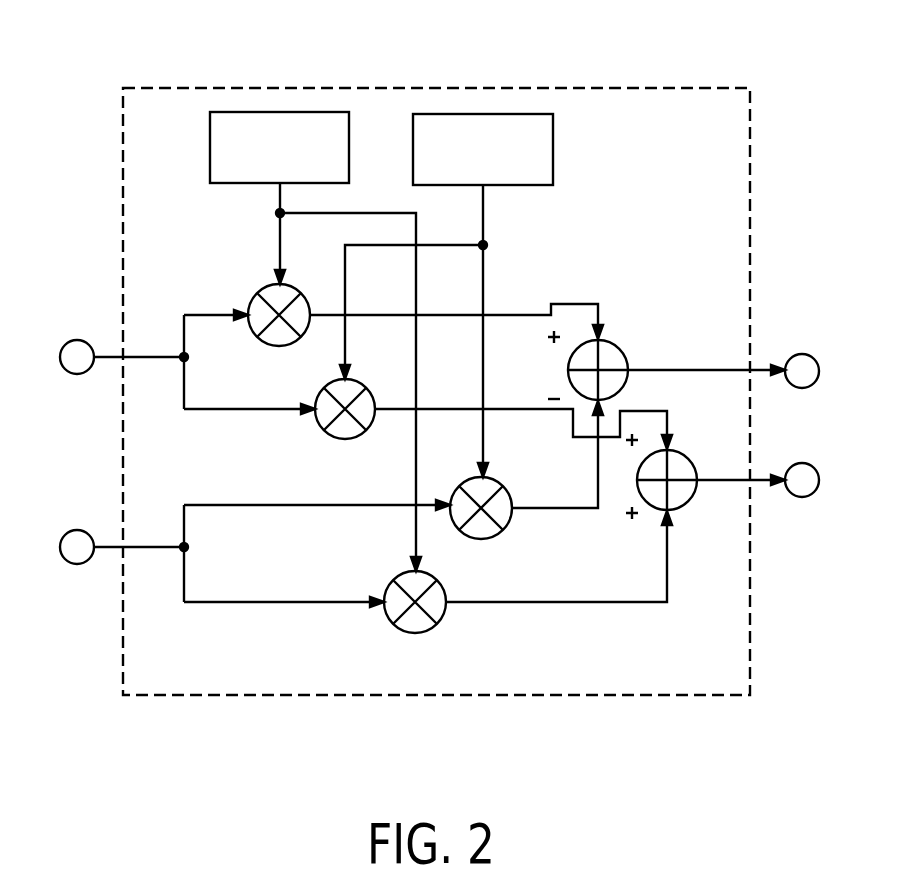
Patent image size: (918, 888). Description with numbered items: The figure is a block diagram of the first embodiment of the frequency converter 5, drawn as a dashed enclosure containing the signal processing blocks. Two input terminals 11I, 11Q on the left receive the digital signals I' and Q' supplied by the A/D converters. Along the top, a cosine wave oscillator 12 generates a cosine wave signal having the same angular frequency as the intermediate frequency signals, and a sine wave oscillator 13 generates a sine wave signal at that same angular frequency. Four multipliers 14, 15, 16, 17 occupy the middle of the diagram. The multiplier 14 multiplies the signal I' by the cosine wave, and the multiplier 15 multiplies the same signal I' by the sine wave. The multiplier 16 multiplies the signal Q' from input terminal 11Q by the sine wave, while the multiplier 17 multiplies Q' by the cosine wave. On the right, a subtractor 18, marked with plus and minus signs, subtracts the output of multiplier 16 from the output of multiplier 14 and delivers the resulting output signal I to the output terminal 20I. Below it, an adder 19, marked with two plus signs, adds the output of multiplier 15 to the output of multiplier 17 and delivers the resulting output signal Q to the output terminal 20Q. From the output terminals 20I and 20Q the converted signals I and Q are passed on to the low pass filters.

The frequency converter 5 is at (713, 88).
The cosine wave oscillator 12 is at (283, 112).
The sine wave oscillator 13 is at (472, 114).
The input terminal 11I is at (70, 341).
The input terminal 11Q is at (70, 531).
The multiplier 14 is at (251, 300).
The multiplier 15 is at (318, 430).
The multiplier 16 is at (507, 528).
The multiplier 17 is at (437, 622).
The subtractor 18 is at (618, 346).
The adder 19 is at (685, 508).
The output terminal 20I is at (805, 354).
The output terminal 20Q is at (800, 497).